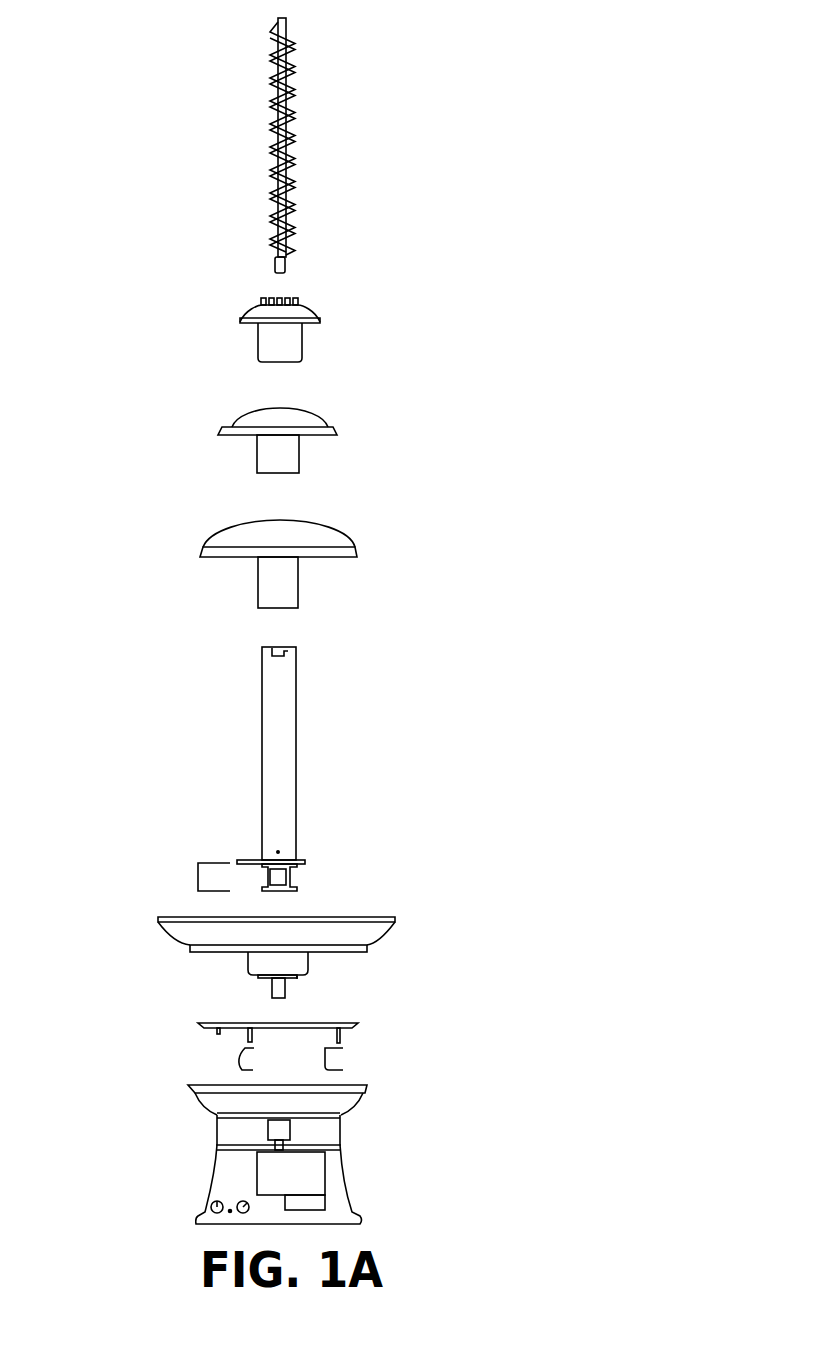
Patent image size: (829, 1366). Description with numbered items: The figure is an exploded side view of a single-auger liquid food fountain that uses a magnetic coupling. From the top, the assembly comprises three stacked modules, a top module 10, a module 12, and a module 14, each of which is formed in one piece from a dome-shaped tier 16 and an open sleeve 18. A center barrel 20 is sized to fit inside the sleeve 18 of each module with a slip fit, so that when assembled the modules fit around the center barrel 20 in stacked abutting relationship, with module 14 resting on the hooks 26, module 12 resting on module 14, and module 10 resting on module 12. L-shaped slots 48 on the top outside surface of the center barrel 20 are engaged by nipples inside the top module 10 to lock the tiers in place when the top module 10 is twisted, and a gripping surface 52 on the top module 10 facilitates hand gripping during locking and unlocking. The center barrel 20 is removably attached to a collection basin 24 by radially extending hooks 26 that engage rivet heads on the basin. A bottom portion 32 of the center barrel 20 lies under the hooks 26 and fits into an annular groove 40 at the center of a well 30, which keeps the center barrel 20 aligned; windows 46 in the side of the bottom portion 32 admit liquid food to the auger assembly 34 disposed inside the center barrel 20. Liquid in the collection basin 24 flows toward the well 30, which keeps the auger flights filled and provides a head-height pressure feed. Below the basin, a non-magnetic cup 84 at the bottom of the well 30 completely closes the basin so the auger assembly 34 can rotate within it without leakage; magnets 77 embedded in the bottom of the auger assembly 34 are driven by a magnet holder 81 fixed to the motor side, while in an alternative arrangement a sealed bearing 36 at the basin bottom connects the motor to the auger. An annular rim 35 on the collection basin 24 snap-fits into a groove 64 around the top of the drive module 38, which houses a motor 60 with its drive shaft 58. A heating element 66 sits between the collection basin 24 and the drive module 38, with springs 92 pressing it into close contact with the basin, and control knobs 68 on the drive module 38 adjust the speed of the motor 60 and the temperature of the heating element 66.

The top module 10 is at (226, 342).
The auger assembly 34 is at (318, 113).
The anisotropic magnets 77 is at (287, 267).
The gripping surface 52 is at (302, 297).
The module 12 is at (224, 464).
The dome-shaped tier 16 is at (233, 417).
The open sleeve 18 is at (302, 453).
The module 14 is at (237, 580).
The center barrel 20 is at (297, 743).
The L-shaped slots 48 is at (287, 657).
The hooks 26 is at (245, 855).
The windows 46 is at (280, 875).
The bottom portion 32 is at (197, 878).
The collection basin 24 is at (178, 935).
The annular rim 35 is at (370, 952).
The well 30 is at (252, 970).
The annular groove 40 is at (253, 977).
The sealed bearing 36 is at (298, 980).
The non-magnetic cup 84 is at (287, 997).
The heating element 66 is at (350, 1027).
The springs 92 is at (347, 1050).
The groove 64 is at (195, 1085).
The drive module 38 is at (280, 1147).
The magnet holder 81 is at (293, 1130).
The drive shaft 58 is at (293, 1142).
The motor 60 is at (320, 1172).
The control knobs 68 is at (207, 1205).